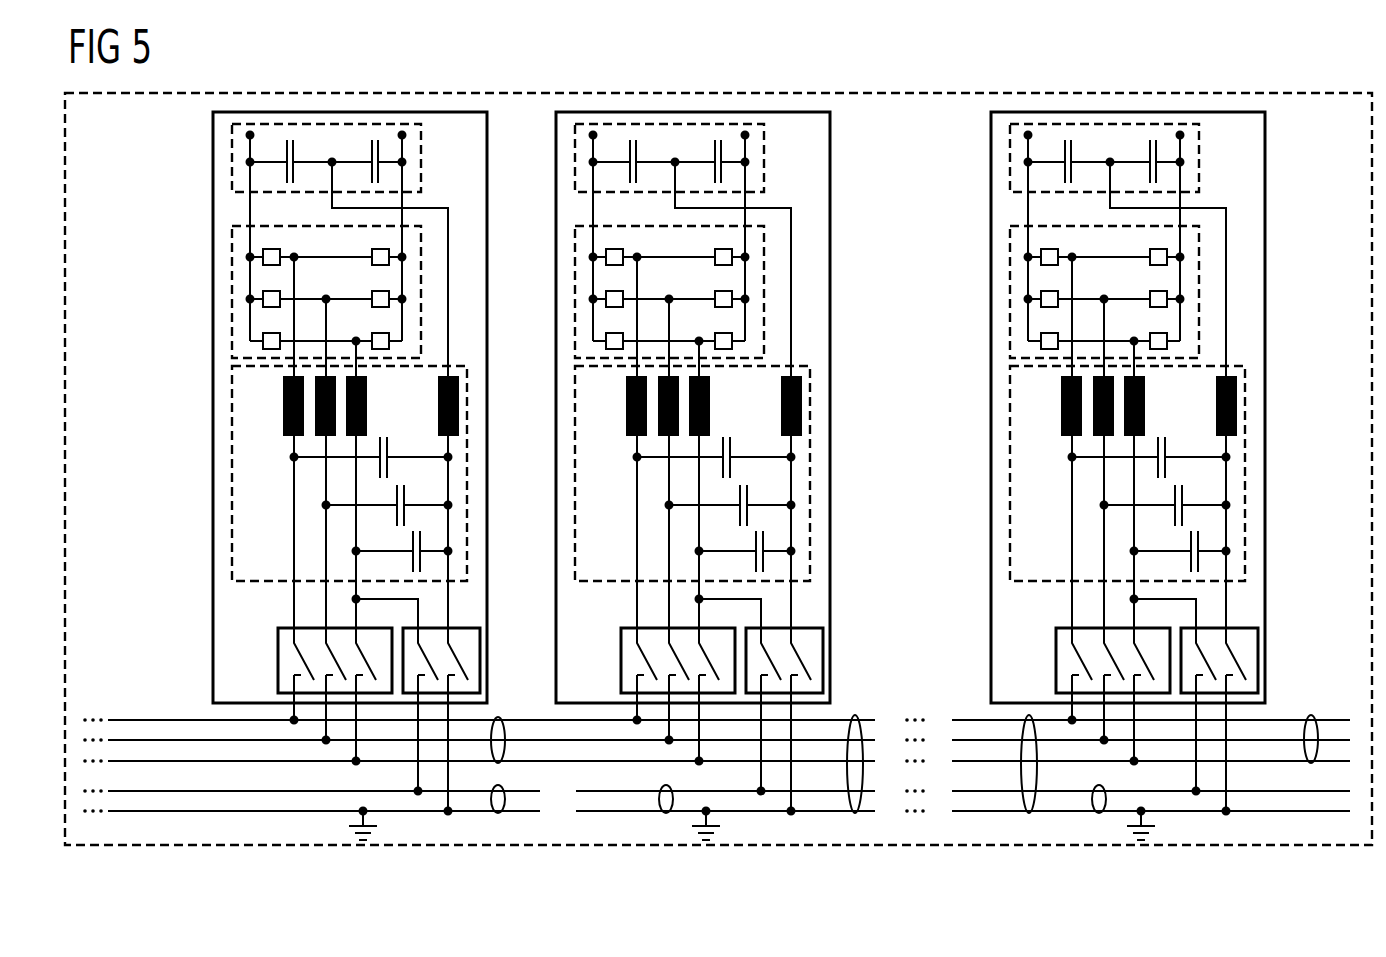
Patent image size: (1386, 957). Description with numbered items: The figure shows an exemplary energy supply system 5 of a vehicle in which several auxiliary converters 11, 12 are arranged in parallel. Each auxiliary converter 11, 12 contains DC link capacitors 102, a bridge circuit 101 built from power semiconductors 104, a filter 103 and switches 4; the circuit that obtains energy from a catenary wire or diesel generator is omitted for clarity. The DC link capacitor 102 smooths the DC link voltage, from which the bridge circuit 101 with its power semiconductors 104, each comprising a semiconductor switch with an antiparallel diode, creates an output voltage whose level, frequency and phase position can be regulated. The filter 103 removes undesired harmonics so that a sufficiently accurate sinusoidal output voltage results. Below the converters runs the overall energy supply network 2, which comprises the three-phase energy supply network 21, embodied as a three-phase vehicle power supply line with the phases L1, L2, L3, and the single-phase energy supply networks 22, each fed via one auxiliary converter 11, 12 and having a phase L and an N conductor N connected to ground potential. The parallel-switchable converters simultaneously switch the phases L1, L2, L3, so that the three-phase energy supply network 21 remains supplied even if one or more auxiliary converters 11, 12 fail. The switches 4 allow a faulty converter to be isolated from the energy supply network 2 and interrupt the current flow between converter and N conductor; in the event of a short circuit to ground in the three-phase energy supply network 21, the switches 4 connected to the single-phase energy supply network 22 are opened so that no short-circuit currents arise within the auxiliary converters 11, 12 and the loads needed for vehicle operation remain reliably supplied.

The energy supply system 5 is at (921, 93).
The auxiliary converter 11 is at (345, 112).
The auxiliary converter 12 is at (688, 112).
The DC link capacitor 102 is at (232, 163).
The bridge circuit 101 is at (232, 283).
The power semiconductor 104 is at (266, 250).
The filter 103 is at (232, 512).
The switch 4 is at (285, 655).
The energy supply network 2 is at (855, 815).
The three-phase energy supply network 21 is at (498, 717).
The single-phase energy supply network 22 is at (498, 815).
The phase L1 is at (118, 720).
The phase L2 is at (158, 740).
The phase L3 is at (192, 761).
The phase L is at (304, 793).
The N conductor N is at (338, 813).